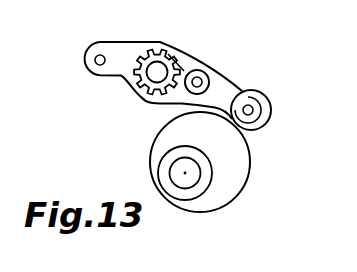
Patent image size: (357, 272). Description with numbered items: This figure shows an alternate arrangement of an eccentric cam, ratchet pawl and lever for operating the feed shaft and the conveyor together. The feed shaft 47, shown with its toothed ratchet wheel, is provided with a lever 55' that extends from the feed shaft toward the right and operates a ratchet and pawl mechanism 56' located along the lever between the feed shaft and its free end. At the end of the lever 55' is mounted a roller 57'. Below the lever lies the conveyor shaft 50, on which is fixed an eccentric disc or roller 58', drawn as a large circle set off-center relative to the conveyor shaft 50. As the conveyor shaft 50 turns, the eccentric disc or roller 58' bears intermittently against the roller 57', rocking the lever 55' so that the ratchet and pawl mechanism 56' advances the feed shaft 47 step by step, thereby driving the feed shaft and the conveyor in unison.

The feed shaft 47 is at (157, 71).
The conveyor shaft 50 is at (185, 172).
The lever 55' is at (174, 80).
The ratchet and pawl mechanism 56' is at (193, 57).
The roller 57' is at (269, 99).
The eccentric disc or roller 58' is at (221, 162).